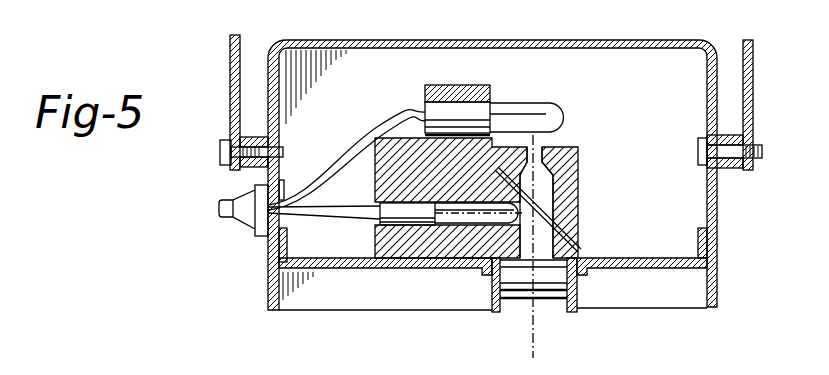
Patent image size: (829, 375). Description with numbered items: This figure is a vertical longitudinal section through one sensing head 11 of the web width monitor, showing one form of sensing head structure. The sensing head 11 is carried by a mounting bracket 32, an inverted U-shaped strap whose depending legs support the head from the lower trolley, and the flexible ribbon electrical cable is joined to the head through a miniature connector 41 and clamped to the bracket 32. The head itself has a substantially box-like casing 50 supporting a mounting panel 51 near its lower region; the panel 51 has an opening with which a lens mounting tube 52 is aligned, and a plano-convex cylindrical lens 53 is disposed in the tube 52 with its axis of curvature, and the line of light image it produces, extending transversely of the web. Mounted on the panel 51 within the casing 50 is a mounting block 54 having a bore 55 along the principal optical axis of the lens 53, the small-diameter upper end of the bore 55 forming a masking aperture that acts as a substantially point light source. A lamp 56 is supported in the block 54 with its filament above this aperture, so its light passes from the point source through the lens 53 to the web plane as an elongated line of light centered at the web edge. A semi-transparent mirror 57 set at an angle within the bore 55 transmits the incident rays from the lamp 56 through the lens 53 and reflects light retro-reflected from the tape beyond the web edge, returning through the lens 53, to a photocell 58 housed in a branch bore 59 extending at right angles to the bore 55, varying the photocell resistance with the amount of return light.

The sensing head 11 is at (240, 281).
The mounting bracket 32 is at (230, 60).
The miniature connector 41 is at (232, 222).
The casing 50 is at (338, 40).
The mounting panel 51 is at (385, 270).
The lens mounting tube 52 is at (573, 296).
The plano-convex cylindrical lens 53 is at (540, 300).
The mounting block 54 is at (578, 152).
The bore 55 is at (545, 180).
The lamp 56 is at (538, 106).
The semi-transparent mirror 57 is at (578, 203).
The photocell 58 is at (402, 212).
The branch bore 59 is at (470, 212).